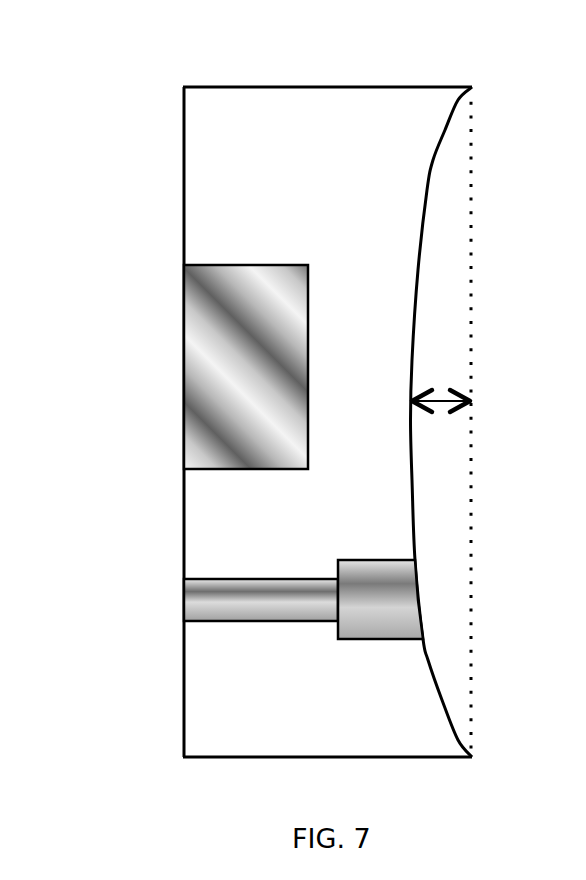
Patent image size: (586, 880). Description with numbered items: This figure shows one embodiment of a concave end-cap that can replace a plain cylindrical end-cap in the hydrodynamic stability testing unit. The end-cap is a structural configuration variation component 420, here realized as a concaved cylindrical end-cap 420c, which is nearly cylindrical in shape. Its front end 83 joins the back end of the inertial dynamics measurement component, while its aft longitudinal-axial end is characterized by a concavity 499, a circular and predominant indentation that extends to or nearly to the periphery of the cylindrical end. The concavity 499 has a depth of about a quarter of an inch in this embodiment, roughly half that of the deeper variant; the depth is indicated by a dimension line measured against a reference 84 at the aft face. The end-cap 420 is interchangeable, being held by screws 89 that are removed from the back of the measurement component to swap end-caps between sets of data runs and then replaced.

The structural configuration variation component 420 is at (310, 422).
The concaved cylindrical end-cap 420c is at (310, 422).
The front end 83 is at (178, 524).
The reference plane 84 is at (485, 321).
The concavity 499 is at (427, 494).
The screws 89 is at (287, 607).